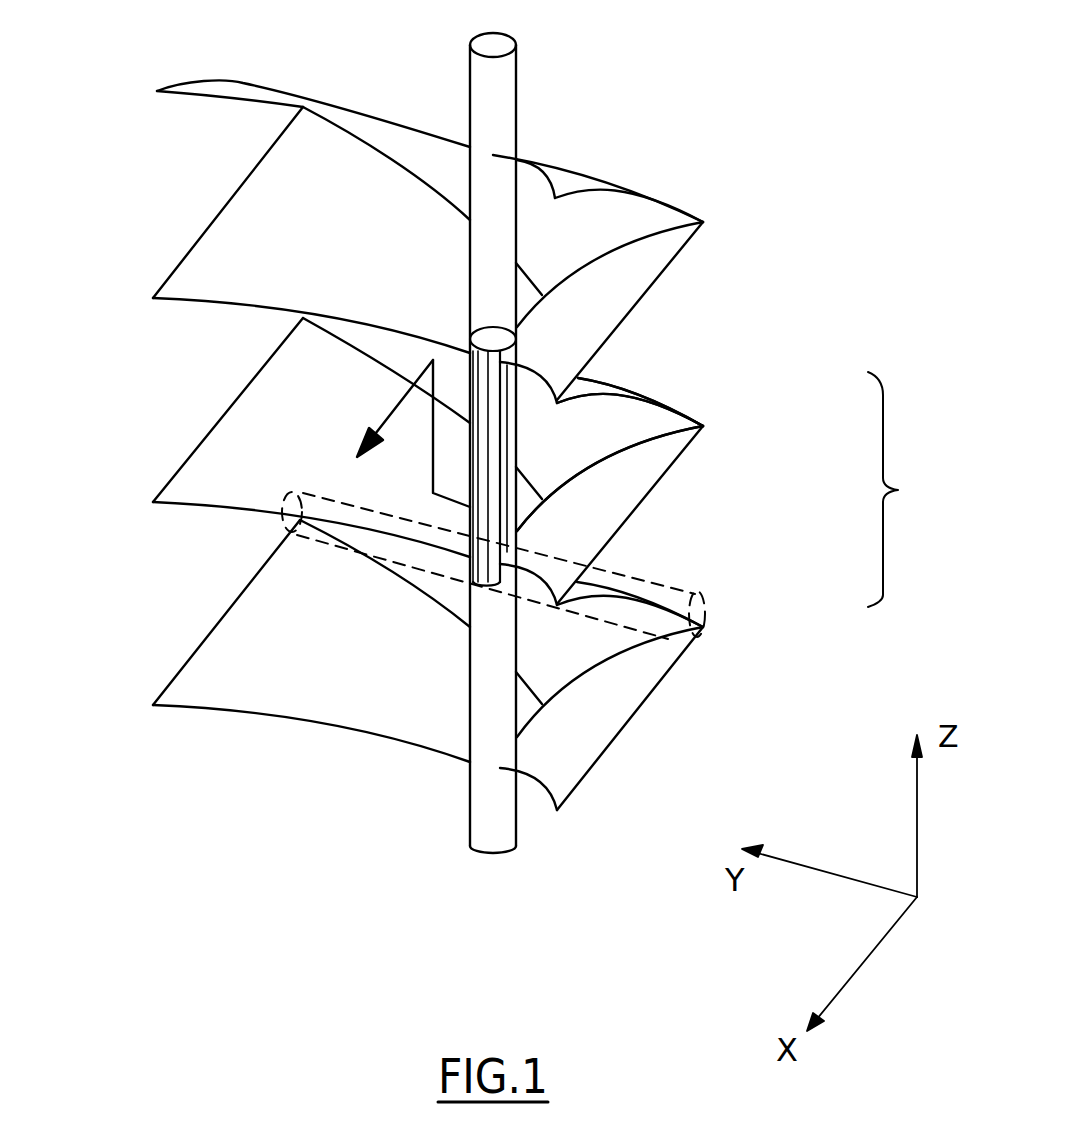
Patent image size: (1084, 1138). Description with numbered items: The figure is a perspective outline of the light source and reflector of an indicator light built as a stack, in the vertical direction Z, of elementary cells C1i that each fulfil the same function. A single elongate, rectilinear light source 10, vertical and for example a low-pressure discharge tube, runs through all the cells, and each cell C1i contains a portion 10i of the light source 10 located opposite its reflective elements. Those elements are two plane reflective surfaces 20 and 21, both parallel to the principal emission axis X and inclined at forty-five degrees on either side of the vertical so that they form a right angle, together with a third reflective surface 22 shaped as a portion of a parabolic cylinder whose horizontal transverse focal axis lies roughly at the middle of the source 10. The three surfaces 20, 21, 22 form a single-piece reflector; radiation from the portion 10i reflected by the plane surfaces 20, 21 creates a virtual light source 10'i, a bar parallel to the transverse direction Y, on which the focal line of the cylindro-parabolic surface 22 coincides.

The light source 10 is at (542, 434).
The portion of the light source 10i is at (495, 457).
The virtual light source 10'i is at (556, 592).
The plane reflective surface 20 is at (207, 480).
The plane reflective surface 21 is at (587, 538).
The third reflective surface 22 is at (648, 420).
The elementary cell C1i is at (916, 489).